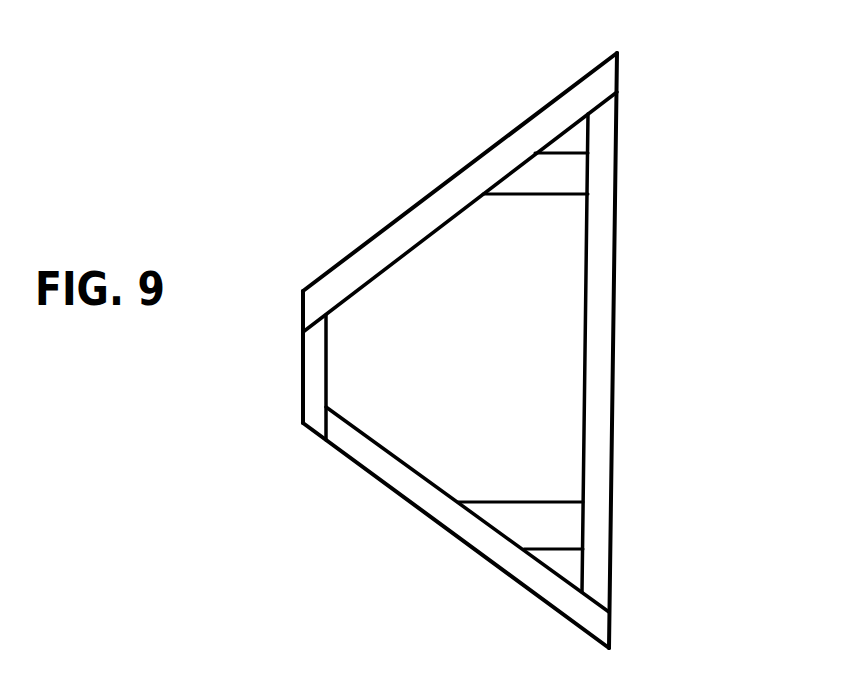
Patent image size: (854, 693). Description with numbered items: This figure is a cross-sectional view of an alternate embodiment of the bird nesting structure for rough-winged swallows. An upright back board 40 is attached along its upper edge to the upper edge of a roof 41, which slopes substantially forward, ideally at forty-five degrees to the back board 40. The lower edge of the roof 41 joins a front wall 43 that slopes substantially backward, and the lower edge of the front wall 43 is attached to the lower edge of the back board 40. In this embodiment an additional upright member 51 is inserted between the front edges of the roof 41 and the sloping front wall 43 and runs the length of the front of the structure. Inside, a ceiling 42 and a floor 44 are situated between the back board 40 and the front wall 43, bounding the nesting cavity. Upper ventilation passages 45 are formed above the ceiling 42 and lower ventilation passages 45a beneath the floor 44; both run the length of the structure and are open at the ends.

The back board 40 is at (597, 342).
The roof 41 is at (433, 200).
The ceiling 42 is at (560, 178).
The front wall 43 is at (442, 518).
The floor 44 is at (562, 523).
The upper ventilation passages 45 is at (573, 138).
The lower ventilation passages 45a is at (570, 562).
The upright member 51 is at (310, 358).